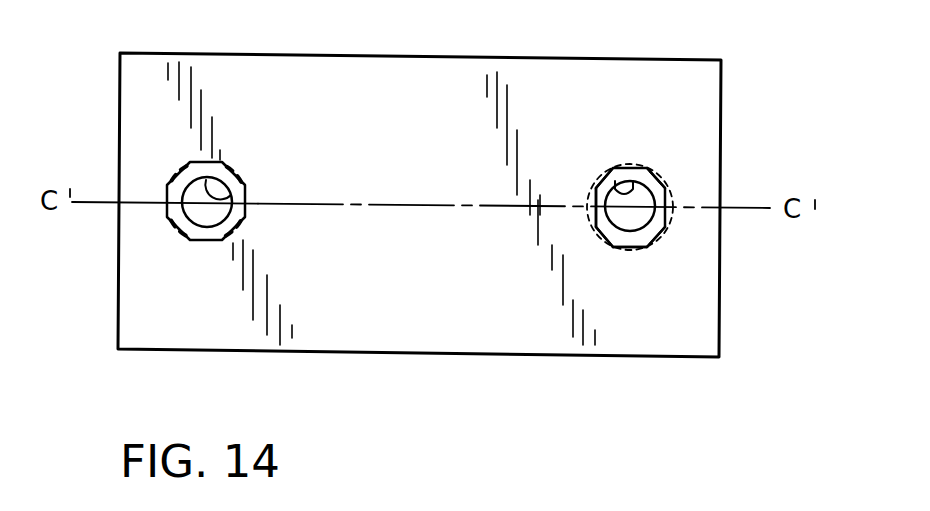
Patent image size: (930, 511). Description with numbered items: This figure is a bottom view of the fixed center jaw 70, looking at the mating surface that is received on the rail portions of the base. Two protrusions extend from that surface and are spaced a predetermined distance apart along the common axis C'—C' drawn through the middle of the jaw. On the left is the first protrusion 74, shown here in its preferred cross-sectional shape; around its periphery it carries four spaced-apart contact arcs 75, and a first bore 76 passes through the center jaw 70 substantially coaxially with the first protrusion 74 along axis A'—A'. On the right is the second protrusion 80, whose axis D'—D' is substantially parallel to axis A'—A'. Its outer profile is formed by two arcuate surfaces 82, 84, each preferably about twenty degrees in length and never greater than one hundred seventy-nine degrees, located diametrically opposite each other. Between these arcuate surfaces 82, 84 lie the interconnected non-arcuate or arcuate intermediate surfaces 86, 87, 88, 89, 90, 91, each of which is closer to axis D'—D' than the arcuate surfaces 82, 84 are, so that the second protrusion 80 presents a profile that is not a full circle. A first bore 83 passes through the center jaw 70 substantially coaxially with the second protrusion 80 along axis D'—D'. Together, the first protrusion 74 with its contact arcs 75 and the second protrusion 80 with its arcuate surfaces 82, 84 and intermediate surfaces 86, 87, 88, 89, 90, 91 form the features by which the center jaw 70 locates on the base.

The center jaw 70 is at (447, 123).
The first protrusion 74 is at (188, 233).
The contact arcs 75 is at (182, 153).
The first bore 76 is at (231, 190).
The second protrusion 80 is at (659, 233).
The arcuate surface 82 is at (669, 153).
The first bore 83 is at (636, 186).
The arcuate surface 84 is at (640, 264).
The intermediate surface 86 is at (601, 178).
The intermediate surface 87 is at (593, 222).
The intermediate surface 88 is at (600, 244).
The intermediate surface 89 is at (651, 168).
The intermediate surface 90 is at (668, 188).
The intermediate surface 91 is at (657, 237).